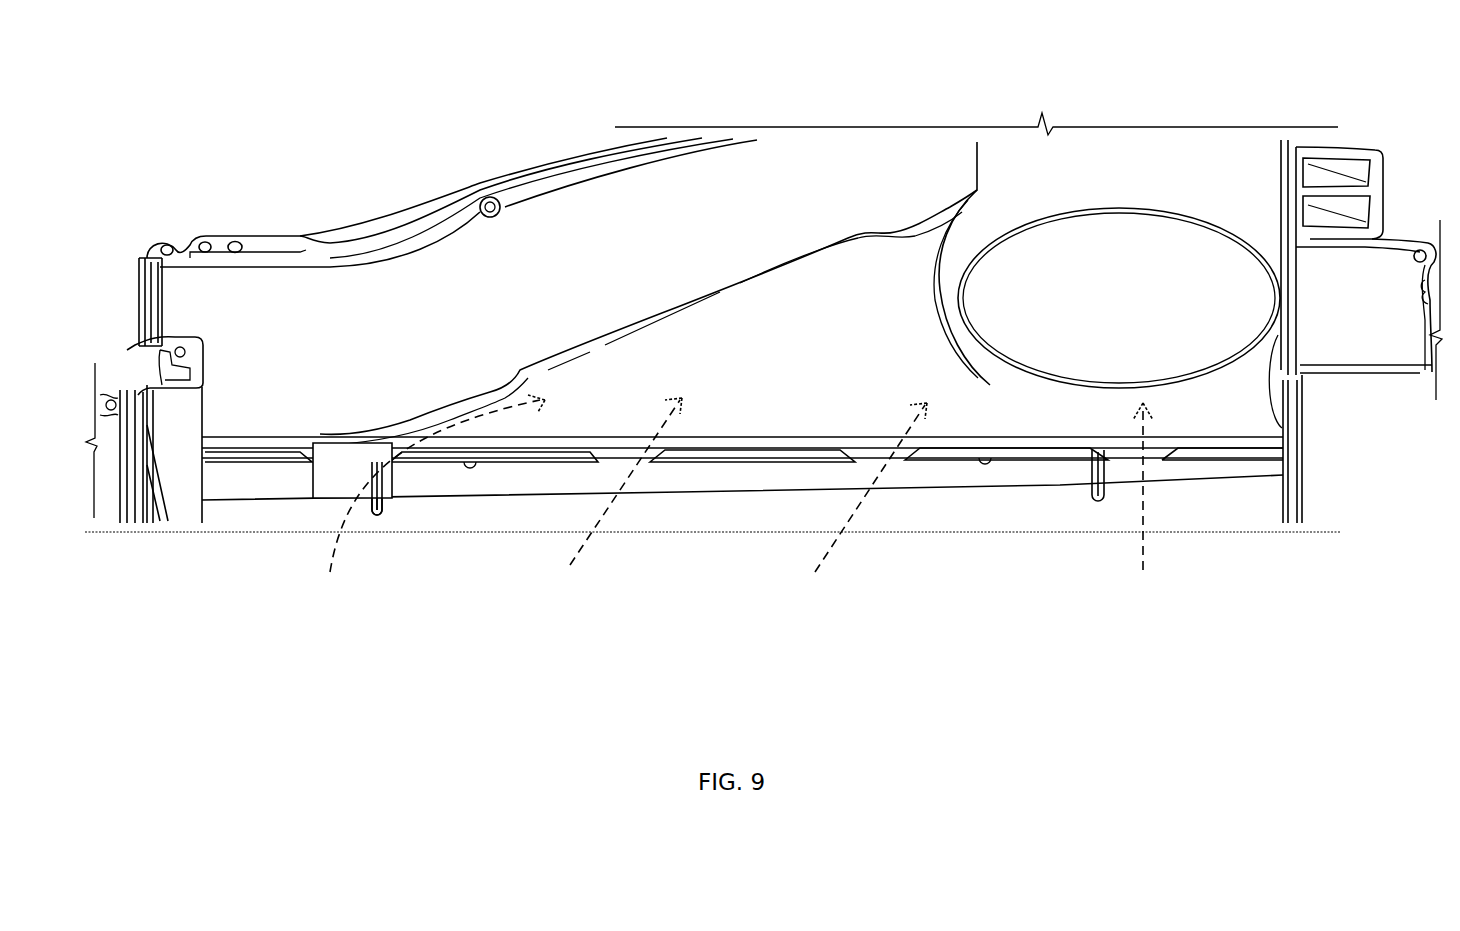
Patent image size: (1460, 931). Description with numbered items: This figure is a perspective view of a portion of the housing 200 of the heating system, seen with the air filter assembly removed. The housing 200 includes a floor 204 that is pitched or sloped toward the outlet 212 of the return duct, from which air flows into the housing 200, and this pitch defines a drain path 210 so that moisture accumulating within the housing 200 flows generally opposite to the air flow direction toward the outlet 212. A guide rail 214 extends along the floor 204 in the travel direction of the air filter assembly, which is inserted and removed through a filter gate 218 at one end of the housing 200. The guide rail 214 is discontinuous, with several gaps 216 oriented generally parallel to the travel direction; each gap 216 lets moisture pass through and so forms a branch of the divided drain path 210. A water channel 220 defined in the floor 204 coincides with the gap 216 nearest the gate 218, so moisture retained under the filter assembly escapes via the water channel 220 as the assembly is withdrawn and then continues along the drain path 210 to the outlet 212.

The housing 200 is at (373, 232).
The floor 204 is at (792, 355).
The drain path 210 is at (350, 522).
The outlet of the return duct 212 is at (1130, 304).
The guide rail 214 is at (238, 452).
The gap 216 is at (340, 440).
The filter gate 218 is at (132, 306).
The water channel 220 is at (331, 490).